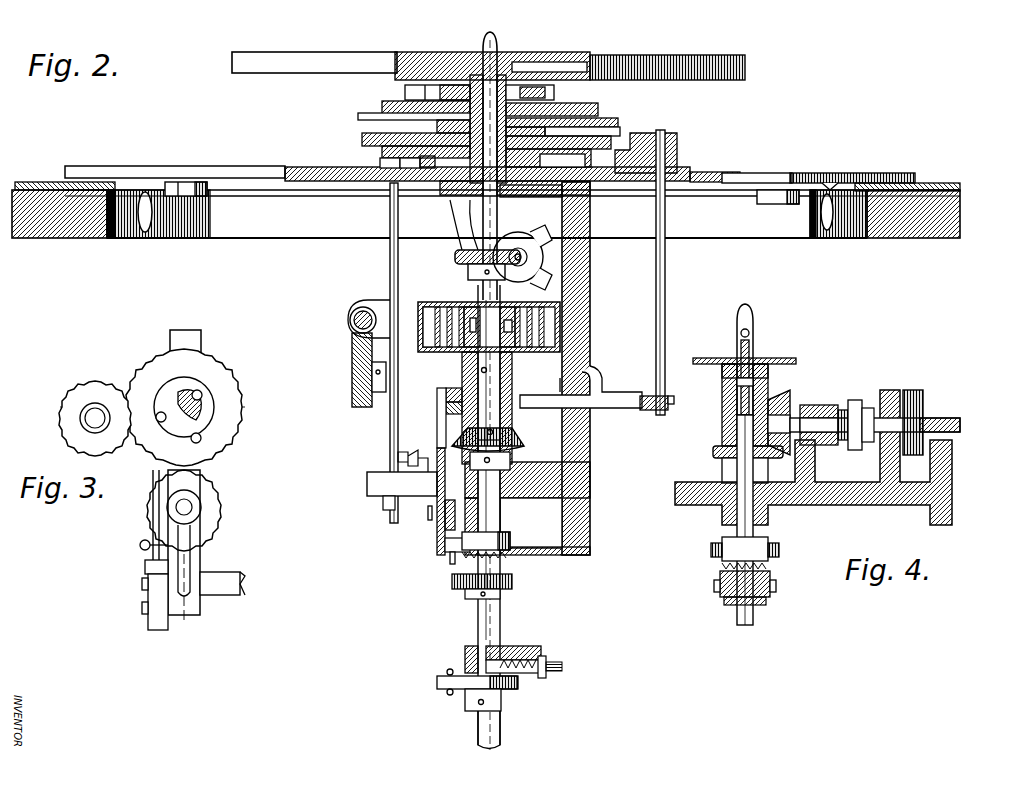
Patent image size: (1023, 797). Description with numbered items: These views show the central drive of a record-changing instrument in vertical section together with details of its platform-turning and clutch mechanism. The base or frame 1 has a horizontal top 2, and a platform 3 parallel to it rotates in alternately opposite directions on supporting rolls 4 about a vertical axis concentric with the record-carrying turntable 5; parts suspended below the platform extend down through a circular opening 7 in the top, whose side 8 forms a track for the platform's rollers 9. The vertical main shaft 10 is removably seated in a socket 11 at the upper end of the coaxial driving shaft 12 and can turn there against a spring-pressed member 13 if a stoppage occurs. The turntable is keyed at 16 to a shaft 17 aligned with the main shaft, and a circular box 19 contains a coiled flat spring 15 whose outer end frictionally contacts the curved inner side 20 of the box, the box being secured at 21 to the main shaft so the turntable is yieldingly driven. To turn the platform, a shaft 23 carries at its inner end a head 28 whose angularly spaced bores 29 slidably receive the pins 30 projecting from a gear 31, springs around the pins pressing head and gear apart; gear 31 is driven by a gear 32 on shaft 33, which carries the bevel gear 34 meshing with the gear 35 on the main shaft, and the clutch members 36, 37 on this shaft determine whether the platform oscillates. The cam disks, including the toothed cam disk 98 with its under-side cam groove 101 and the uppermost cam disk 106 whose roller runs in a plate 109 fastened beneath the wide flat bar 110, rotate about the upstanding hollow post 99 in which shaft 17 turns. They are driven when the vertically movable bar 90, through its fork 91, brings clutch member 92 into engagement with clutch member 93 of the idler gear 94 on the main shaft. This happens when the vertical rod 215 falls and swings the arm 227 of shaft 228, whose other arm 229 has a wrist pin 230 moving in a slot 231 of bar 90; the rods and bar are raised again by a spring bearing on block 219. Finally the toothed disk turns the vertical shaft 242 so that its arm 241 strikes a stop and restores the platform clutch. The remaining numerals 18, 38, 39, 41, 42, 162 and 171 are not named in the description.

In FIG. 2, the base or frame 1 is at (68, 242).
In FIG. 2, the horizontal top 2 is at (40, 188).
In FIG. 2, the platform 3 is at (812, 176).
In FIG. 2, the supporting rolls 4 is at (143, 234).
In FIG. 2, the record-carrying turntable 5 is at (646, 64).
In FIG. 2, the circular opening 7 is at (288, 190).
In FIG. 2, the side of opening 8 is at (712, 196).
In FIG. 2, the rollers 9 is at (208, 194).
In FIG. 2, the main shaft 10 is at (502, 426).
In FIG. 4, the main shaft 10 is at (768, 520).
In FIG. 2, the socket 11 is at (465, 658).
In FIG. 2, the driving shaft 12 is at (478, 730).
In FIG. 2, the spring-pressed member 13 is at (504, 648).
In FIG. 2, the coiled flat spring 15 is at (472, 350).
In FIG. 2, the key 16 is at (352, 134).
In FIG. 4, the key 16 is at (754, 335).
In FIG. 2, the turntable shaft 17 is at (482, 216).
In FIG. 4, the turntable shaft 17 is at (754, 314).
In FIG. 2, the spindle head 18 is at (505, 80).
In FIG. 2, the circular box 19 is at (516, 358).
In FIG. 4, the circular box 19 is at (700, 358).
In FIG. 2, the curved inner side 20 is at (562, 322).
In FIG. 2, the securing point of box 21 is at (462, 380).
In FIG. 4, the securing point of box 21 is at (722, 378).
In FIG. 3, the shaft 23 is at (200, 406).
In FIG. 3, the head 28 is at (210, 430).
In FIG. 3, the bores 29 is at (202, 394).
In FIG. 3, the pins 30 is at (158, 412).
In FIG. 3, the gear 31 is at (204, 372).
In FIG. 4, the gear 32 is at (916, 396).
In FIG. 4, the shaft 33 is at (955, 426).
In FIG. 4, the bevel gear 34 is at (785, 392).
In FIG. 2, the gear 35 is at (512, 448).
In FIG. 4, the gear 35 is at (712, 452).
In FIG. 4, the clutch member 36 is at (838, 405).
In FIG. 4, the clutch member 37 is at (840, 448).
In FIG. 3, the gear 38 is at (62, 410).
In FIG. 2, the pin 39 is at (350, 324).
In FIG. 3, the pin 39 is at (98, 420).
In FIG. 2, the ring 41 is at (350, 310).
In FIG. 2, the arm 42 is at (355, 360).
In FIG. 2, the vertically movable bar 90 is at (438, 526).
In FIG. 4, the fork 91 is at (724, 538).
In FIG. 2, the clutch member 92 is at (508, 556).
In FIG. 4, the clutch member 92 is at (722, 566).
In FIG. 2, the clutch member 93 is at (510, 576).
In FIG. 4, the clutch member 93 is at (720, 580).
In FIG. 2, the idler gear 94 is at (504, 590).
In FIG. 4, the idler gear 94 is at (724, 602).
In FIG. 2, the toothed cam disk 98 is at (376, 152).
In FIG. 2, the hollow post 99 is at (528, 133).
In FIG. 2, the cam groove 101 is at (548, 159).
In FIG. 2, the uppermost cam disk 106 is at (598, 108).
In FIG. 2, the plate 109 is at (405, 92).
In FIG. 2, the wide flat bar 110 is at (554, 92).
In FIG. 2, the disc 162 is at (580, 136).
In FIG. 2, the plate 171 is at (372, 113).
In FIG. 2, the vertical rod 215 is at (665, 282).
In FIG. 2, the block 219 is at (648, 136).
In FIG. 2, the arm 227 is at (652, 410).
In FIG. 2, the shaft 228 is at (620, 402).
In FIG. 2, the arm 229 is at (442, 420).
In FIG. 2, the wrist pin 230 is at (446, 396).
In FIG. 2, the slot 231 is at (446, 410).
In FIG. 2, the arm 241 is at (402, 470).
In FIG. 2, the vertical shaft 242 is at (390, 264).